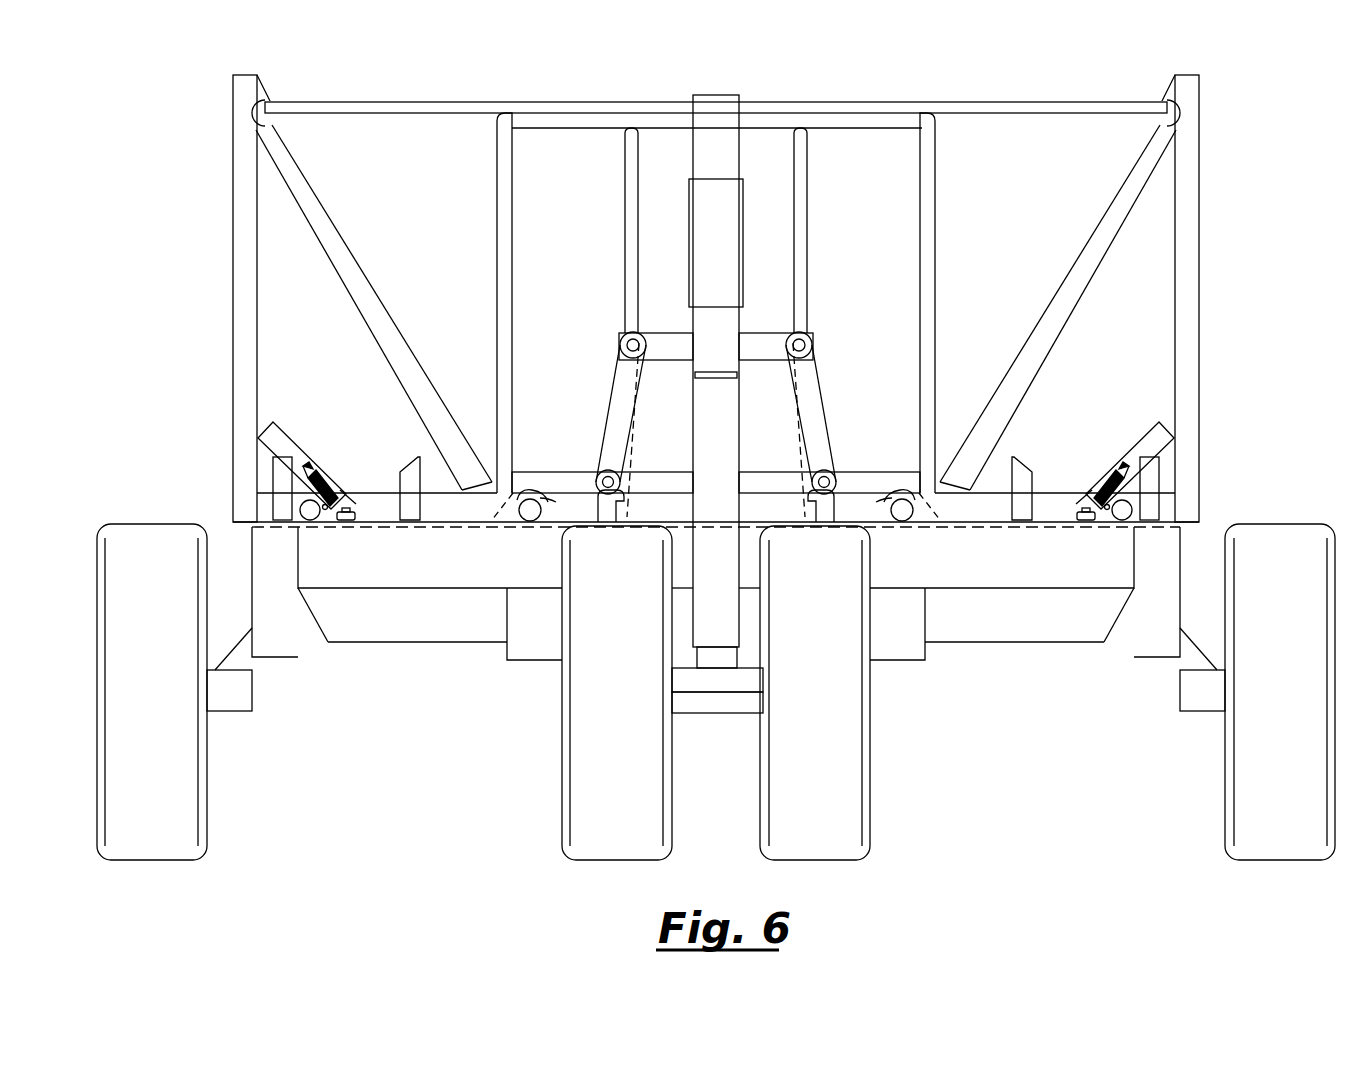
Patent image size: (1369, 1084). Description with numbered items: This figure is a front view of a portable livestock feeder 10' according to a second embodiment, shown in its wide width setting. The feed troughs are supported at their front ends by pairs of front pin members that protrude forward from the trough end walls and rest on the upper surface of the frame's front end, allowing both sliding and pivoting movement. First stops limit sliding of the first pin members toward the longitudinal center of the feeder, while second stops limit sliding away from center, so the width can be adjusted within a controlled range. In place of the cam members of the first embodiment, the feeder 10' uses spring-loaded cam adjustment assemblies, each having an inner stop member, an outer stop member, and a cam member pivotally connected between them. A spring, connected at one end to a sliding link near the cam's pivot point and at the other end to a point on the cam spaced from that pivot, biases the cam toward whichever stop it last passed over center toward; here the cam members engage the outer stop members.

The livestock feeder 10' is at (634, 298).